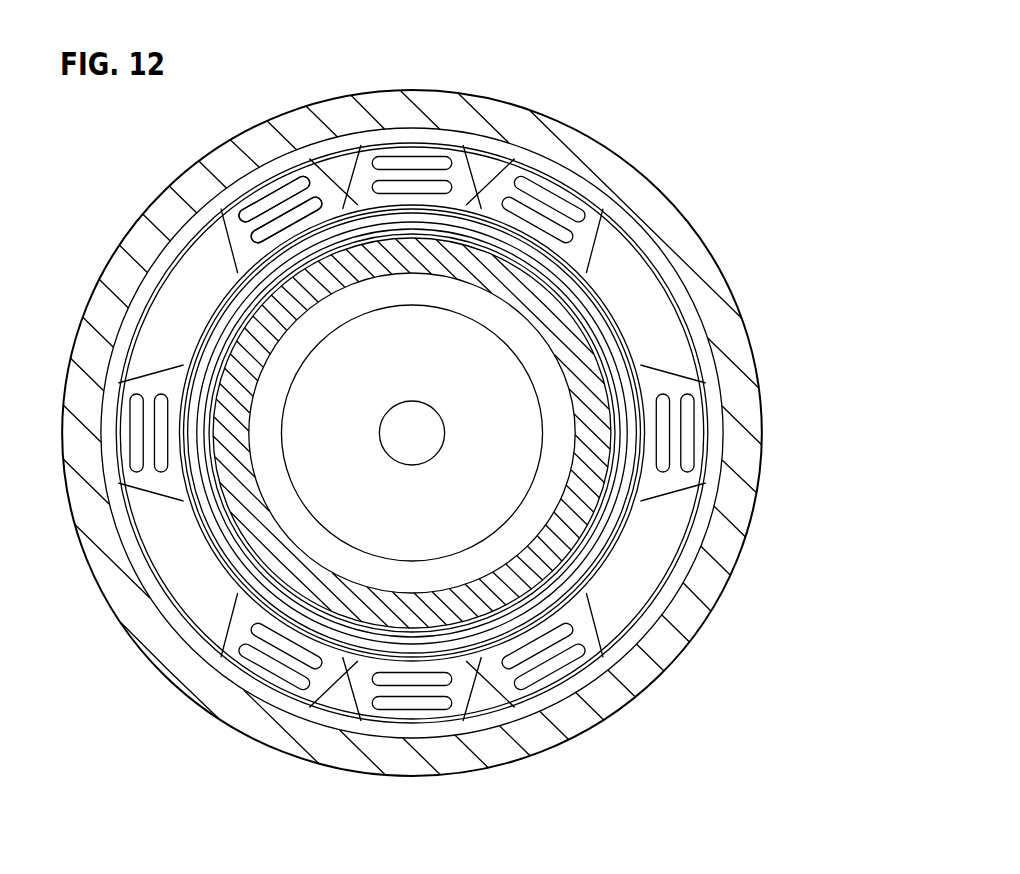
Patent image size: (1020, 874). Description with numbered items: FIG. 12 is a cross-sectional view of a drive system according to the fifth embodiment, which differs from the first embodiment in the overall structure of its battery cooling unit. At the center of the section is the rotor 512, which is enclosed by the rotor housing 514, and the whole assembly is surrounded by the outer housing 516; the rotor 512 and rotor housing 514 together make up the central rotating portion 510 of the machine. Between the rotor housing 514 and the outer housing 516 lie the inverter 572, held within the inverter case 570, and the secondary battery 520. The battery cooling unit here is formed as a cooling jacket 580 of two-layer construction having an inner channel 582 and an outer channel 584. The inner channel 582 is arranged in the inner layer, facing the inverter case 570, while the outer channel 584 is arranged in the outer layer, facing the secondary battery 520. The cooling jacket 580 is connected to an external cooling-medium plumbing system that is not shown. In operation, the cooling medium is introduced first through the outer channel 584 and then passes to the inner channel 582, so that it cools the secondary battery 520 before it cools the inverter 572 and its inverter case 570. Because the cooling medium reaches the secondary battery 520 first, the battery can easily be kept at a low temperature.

The hub assembly 510 is at (537, 421).
The rotor 512 is at (488, 380).
The rotor housing 514 is at (548, 302).
The outer housing 516 is at (643, 173).
The secondary battery 520 is at (460, 743).
The inverter case 570 is at (363, 650).
The inverter 572 is at (340, 653).
The cooling jacket 580 is at (262, 198).
The inner channel 582 is at (253, 215).
The outer channel 584 is at (323, 173).